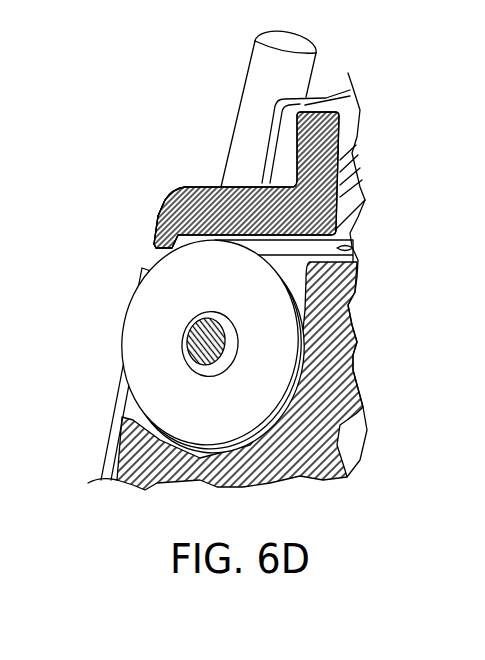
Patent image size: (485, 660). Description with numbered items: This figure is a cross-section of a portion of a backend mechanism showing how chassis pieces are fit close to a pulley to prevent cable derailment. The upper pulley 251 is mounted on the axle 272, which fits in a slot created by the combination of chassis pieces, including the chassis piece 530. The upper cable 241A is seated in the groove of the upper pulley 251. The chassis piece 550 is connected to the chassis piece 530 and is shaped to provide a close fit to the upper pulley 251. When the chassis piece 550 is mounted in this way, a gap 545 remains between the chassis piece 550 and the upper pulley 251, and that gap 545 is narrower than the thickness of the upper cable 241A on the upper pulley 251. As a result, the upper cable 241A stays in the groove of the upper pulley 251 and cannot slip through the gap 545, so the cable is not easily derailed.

The chassis piece 550 is at (210, 197).
The gap 545 is at (180, 230).
The axle 272 is at (187, 340).
The upper pulley 251 is at (147, 382).
The upper cable 241A is at (118, 418).
The chassis piece 530 is at (147, 477).